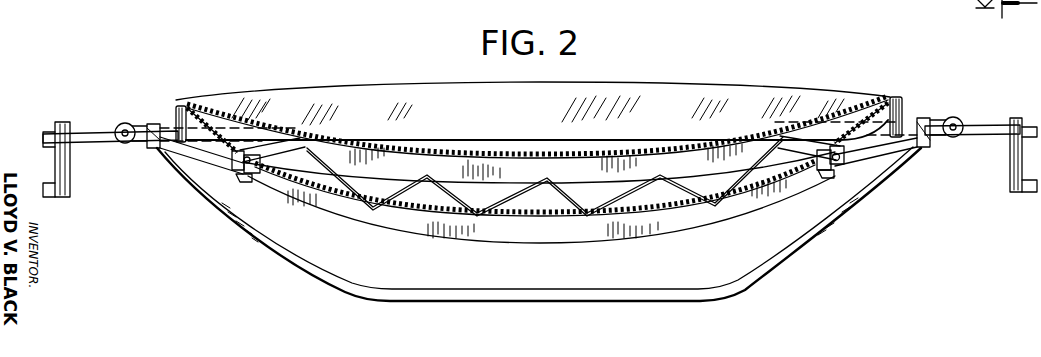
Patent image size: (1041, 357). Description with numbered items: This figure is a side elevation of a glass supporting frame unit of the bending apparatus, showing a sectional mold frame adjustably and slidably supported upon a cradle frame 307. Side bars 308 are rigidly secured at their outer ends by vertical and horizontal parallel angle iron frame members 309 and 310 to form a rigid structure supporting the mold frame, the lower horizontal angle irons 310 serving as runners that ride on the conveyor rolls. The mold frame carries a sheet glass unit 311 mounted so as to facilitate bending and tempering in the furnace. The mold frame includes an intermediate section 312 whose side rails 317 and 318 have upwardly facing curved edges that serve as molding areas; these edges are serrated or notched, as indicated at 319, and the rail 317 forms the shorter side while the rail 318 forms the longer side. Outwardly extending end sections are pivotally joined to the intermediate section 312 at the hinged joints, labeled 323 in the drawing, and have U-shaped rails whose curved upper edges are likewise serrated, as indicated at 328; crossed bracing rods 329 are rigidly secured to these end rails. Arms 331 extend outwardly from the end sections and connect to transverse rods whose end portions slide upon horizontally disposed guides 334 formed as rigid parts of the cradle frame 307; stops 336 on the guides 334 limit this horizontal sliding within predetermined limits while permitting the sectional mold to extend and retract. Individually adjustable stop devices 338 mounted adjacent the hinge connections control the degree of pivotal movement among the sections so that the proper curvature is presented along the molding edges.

The cradle frame 307 is at (54, 160).
The side bars 308 is at (436, 292).
The vertical parallel angle iron frame members 309 is at (65, 173).
The horizontal parallel angle iron frame members 310 is at (55, 184).
The sheet glass unit 311 is at (737, 100).
The intermediate section 312 is at (375, 229).
The side rail 317 is at (477, 160).
The side rail 318 is at (495, 232).
The serrations 319 is at (600, 223).
The pivot blocks 323 is at (288, 142).
The serrations 328 is at (857, 113).
The crossed bracing rods 329 is at (270, 157).
The arm 331 is at (897, 143).
The guides 334 is at (97, 138).
The stops 336 is at (157, 123).
The adjustable stop devices 338 is at (257, 181).